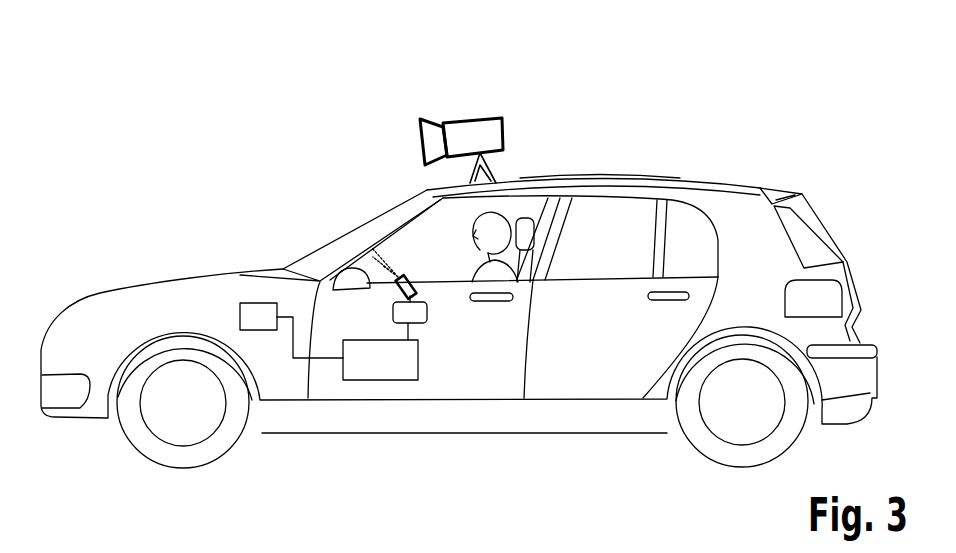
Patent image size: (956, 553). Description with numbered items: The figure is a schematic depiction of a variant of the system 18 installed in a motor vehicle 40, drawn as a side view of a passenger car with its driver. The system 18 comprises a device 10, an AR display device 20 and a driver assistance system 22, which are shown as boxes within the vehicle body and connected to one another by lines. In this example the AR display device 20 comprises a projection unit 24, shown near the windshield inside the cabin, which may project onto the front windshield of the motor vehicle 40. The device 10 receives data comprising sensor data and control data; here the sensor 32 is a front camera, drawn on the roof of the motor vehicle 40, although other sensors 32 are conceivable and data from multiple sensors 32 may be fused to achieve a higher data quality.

The system 18 is at (133, 96).
The AR display device 20 is at (350, 220).
The driver assistance system 22 is at (259, 303).
The device 10 is at (382, 381).
The projection unit 24 is at (427, 323).
The sensor 32 is at (473, 117).
The motor vehicle 40 is at (611, 178).